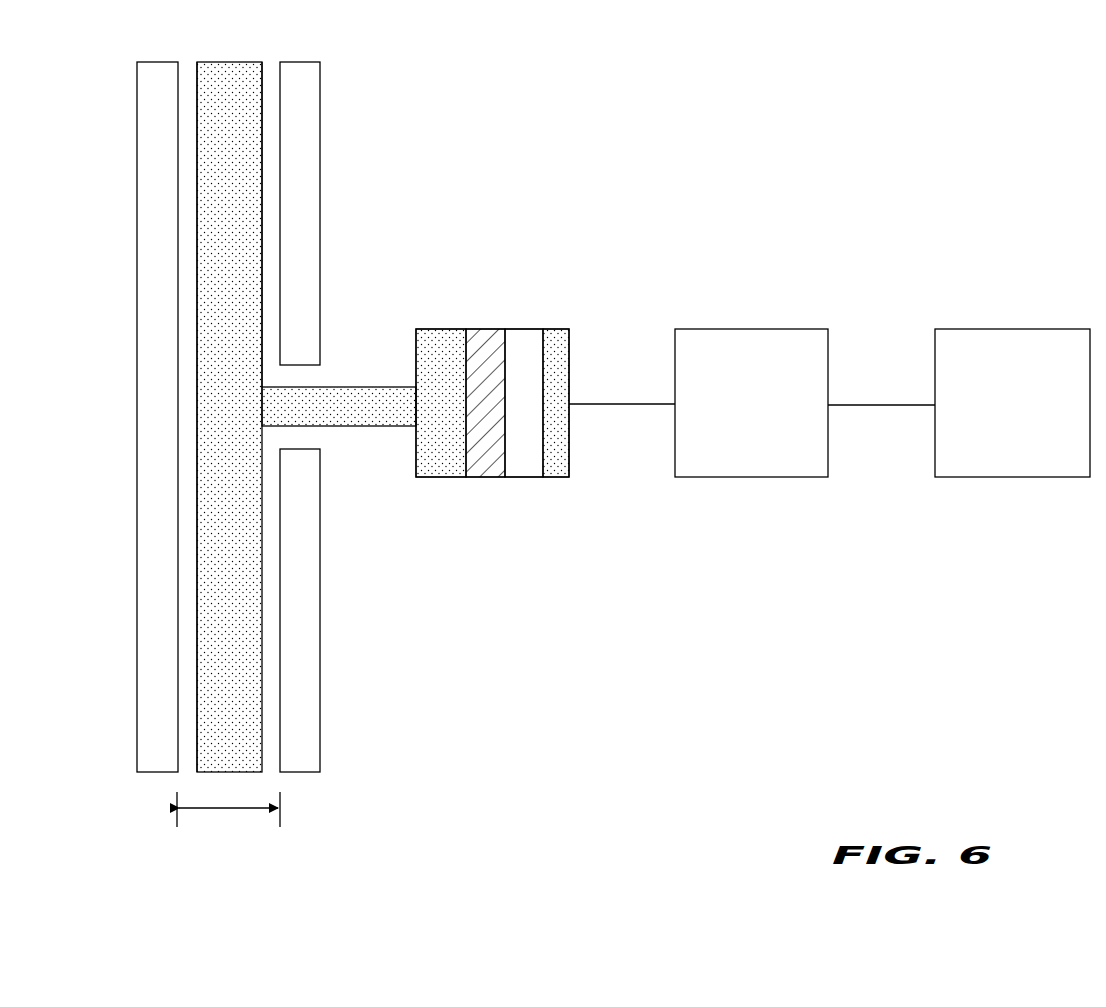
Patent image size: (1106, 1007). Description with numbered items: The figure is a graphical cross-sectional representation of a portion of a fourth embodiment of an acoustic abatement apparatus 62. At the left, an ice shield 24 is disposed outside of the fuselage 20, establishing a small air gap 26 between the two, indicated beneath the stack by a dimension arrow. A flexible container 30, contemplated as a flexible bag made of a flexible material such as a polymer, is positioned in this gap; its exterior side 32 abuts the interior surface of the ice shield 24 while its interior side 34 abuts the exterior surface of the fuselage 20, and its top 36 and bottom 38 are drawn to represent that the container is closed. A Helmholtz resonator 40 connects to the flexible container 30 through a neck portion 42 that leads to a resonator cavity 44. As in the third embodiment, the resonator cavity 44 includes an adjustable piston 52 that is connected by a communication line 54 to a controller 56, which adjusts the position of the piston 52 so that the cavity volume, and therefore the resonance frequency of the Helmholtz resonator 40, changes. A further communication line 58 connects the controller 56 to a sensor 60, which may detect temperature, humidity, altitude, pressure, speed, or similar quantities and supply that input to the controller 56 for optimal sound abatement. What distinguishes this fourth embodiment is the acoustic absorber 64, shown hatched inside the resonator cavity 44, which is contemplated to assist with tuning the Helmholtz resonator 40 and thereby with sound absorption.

The fuselage 20 is at (320, 168).
The ice shield 24 is at (137, 460).
The air gap 26 is at (230, 810).
The flexible container 30 is at (213, 118).
The exterior side 32 is at (192, 311).
The interior side 34 is at (262, 145).
The top 36 is at (232, 62).
The bottom 38 is at (230, 771).
The Helmholtz resonator 40 is at (616, 530).
The neck portion 42 is at (350, 426).
The resonator cavity 44 is at (437, 329).
The adjustable piston 52 is at (527, 458).
The communication line 54 is at (595, 404).
The controller 56 is at (826, 478).
The communication line 58 is at (850, 405).
The sensor 60 is at (1020, 478).
The acoustic abatement apparatus 62 is at (502, 204).
The acoustic absorber 64 is at (492, 457).